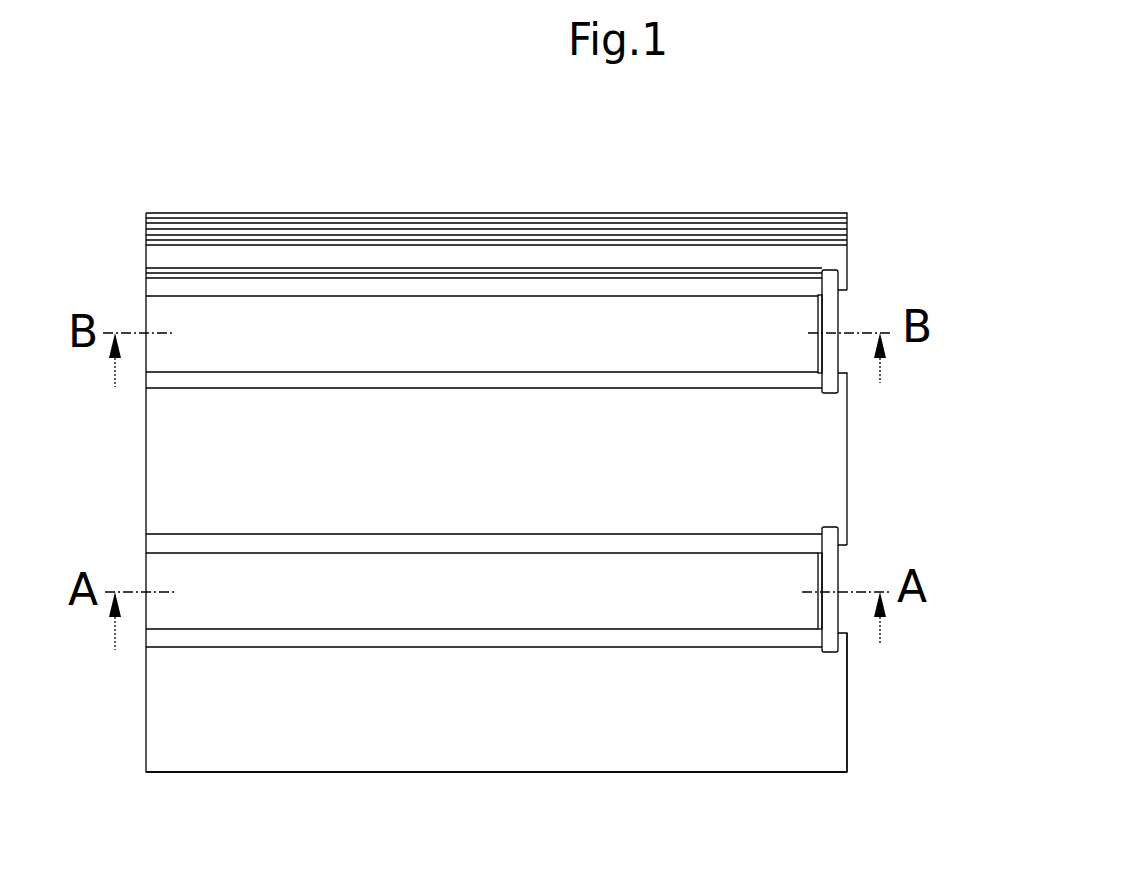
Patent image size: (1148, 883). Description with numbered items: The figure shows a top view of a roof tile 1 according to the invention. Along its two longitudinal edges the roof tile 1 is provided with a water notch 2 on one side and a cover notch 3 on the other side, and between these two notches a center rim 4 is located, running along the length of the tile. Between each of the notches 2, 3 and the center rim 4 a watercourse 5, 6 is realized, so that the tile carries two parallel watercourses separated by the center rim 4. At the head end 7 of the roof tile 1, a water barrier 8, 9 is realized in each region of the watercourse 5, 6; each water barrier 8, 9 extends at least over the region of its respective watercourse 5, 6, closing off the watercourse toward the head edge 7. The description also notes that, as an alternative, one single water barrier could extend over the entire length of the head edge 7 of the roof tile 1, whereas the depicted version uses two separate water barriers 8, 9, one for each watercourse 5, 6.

The roof tile 1 is at (138, 193).
The water notch 2 is at (358, 223).
The cover notch 3 is at (430, 773).
The center rim 4 is at (165, 472).
The watercourse 5 is at (672, 343).
The watercourse 6 is at (672, 608).
The head end 7 is at (851, 780).
The water barrier 8 is at (827, 315).
The water barrier 9 is at (832, 567).